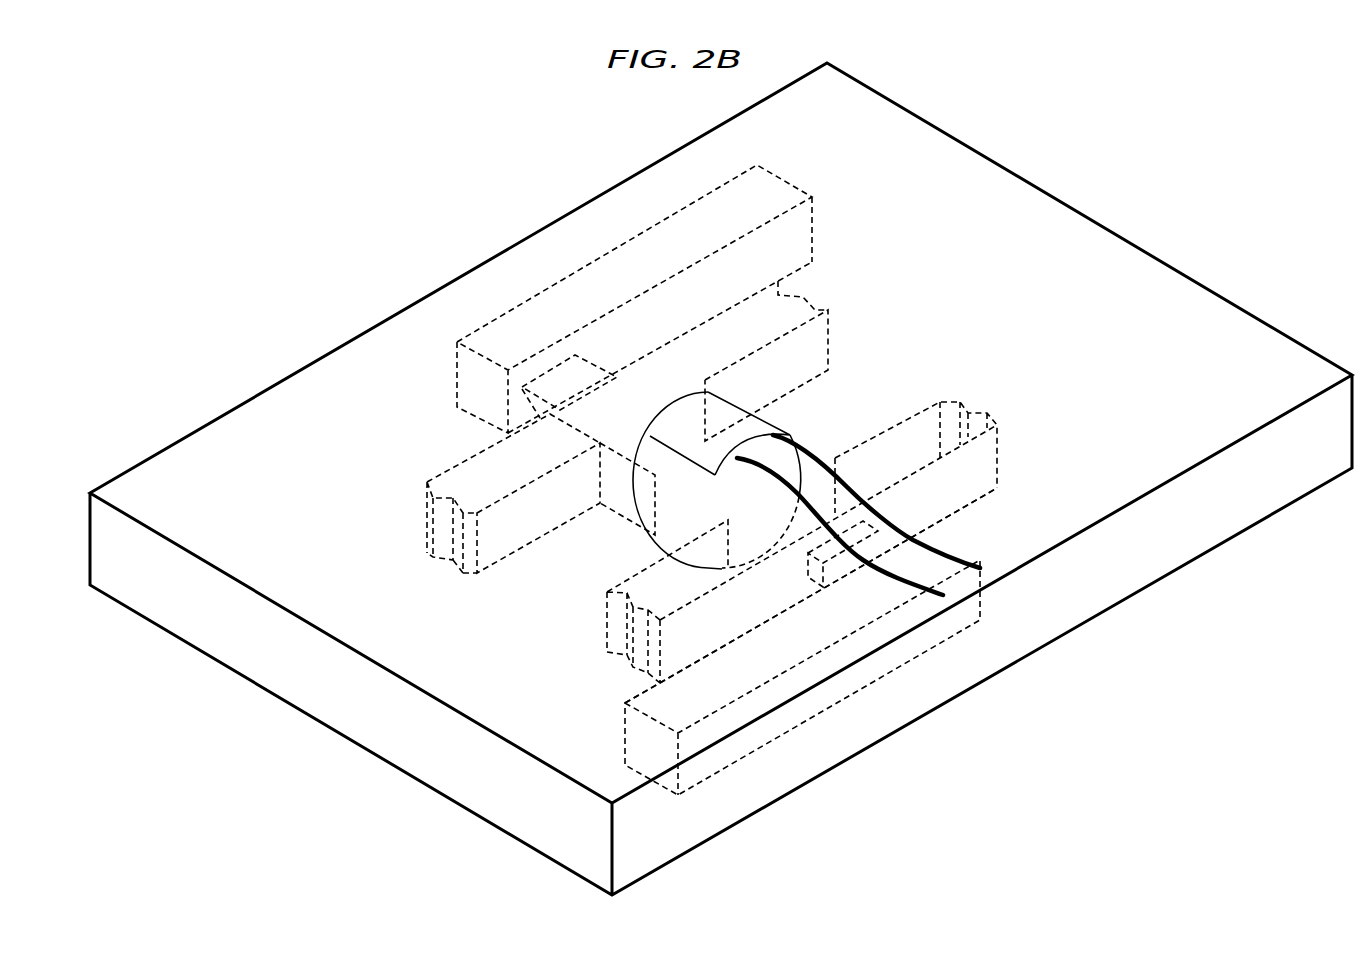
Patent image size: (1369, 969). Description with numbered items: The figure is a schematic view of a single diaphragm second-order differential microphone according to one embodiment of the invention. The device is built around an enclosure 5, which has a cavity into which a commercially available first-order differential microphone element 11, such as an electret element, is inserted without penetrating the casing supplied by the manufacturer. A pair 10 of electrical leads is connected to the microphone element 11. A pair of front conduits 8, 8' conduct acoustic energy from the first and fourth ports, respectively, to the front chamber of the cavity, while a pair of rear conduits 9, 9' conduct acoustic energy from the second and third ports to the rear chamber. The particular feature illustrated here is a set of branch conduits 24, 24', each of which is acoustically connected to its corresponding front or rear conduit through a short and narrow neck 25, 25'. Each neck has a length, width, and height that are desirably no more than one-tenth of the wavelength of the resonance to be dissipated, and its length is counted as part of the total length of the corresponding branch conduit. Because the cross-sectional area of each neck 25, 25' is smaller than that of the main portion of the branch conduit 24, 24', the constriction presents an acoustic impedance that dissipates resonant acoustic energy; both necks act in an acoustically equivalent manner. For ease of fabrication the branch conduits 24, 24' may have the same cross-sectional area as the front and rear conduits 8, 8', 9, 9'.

The enclosure 5 is at (664, 833).
The front conduit 8 is at (541, 493).
The front conduit 8' is at (789, 361).
The rear conduit 9 is at (790, 564).
The rear conduit 9' is at (916, 446).
The pair of electrical leads 10 is at (943, 595).
The microphone element 11 is at (678, 428).
The branch conduit 24 is at (634, 292).
The branch conduit 24' is at (787, 641).
The neck 25 is at (518, 386).
The neck 25' is at (872, 536).